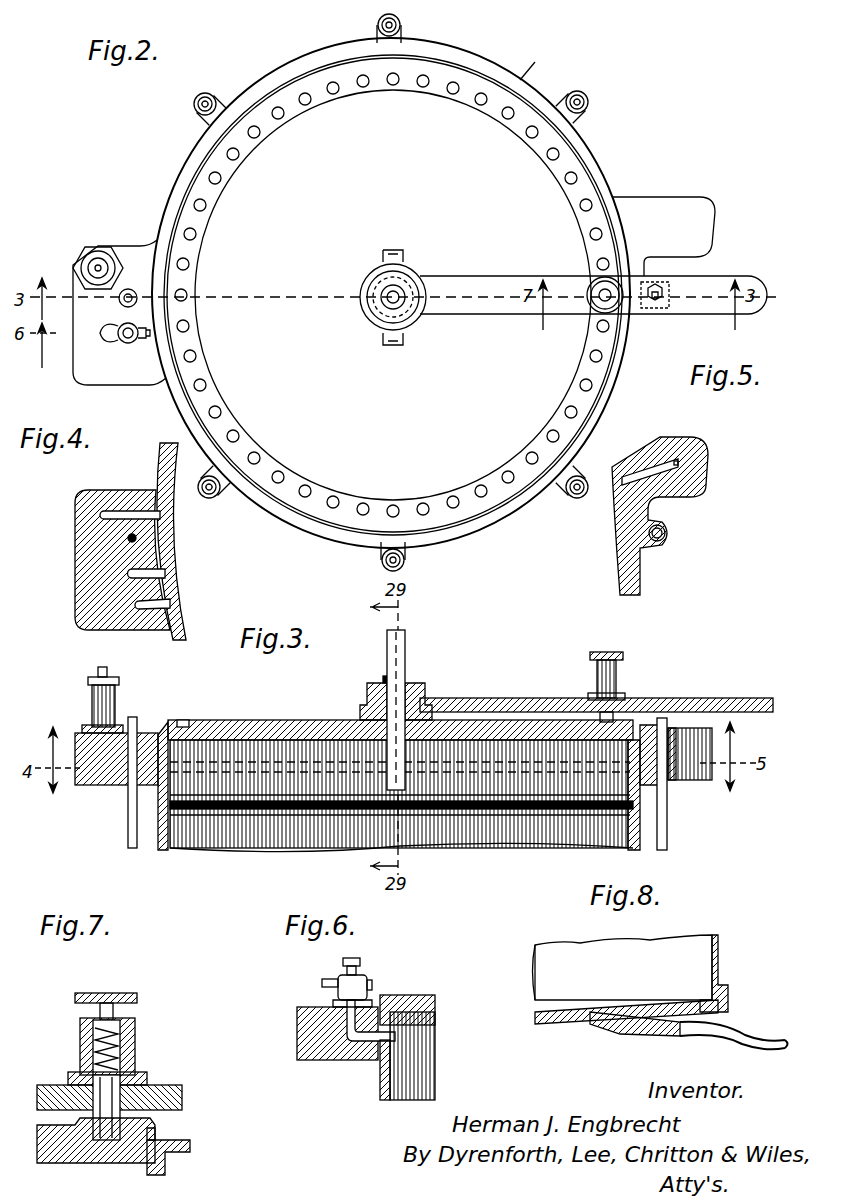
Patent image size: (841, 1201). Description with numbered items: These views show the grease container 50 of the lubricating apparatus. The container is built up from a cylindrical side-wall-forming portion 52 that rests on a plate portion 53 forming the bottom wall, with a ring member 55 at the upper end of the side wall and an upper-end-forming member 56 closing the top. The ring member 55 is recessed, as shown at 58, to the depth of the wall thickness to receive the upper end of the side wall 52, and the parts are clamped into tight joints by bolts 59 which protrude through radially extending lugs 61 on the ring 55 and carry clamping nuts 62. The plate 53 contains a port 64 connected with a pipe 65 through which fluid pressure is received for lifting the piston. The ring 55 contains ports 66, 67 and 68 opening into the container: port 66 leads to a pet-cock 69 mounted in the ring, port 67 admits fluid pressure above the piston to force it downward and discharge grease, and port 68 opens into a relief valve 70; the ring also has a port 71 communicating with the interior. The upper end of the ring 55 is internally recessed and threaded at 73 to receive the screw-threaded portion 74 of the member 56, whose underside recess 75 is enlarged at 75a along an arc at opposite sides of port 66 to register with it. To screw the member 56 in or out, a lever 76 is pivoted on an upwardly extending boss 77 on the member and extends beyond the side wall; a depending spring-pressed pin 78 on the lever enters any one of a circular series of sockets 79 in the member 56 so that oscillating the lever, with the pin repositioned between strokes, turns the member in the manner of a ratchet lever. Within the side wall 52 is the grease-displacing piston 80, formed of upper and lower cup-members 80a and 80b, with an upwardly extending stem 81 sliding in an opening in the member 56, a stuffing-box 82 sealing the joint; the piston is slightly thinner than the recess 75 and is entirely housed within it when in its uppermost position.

In FIG. 2, the grease container 50 is at (380, 293).
In FIG. 3, the grease container 50 is at (662, 840).
In FIG. 6, the grease container 50 is at (415, 1078).
In FIG. 8, the grease container 50 is at (692, 955).
In FIG. 2, the cylindrical side-wall-forming portion 52 is at (664, 208).
In FIG. 3, the cylindrical side-wall-forming portion 52 is at (668, 820).
In FIG. 6, the cylindrical side-wall-forming portion 52 is at (380, 1088).
In FIG. 8, the cylindrical side-wall-forming portion 52 is at (718, 965).
In FIG. 8, the plate portion 53 is at (562, 1024).
In FIG. 2, the ring member 55 is at (538, 62).
In FIG. 4, the ring member 55 is at (180, 634).
In FIG. 5, the ring member 55 is at (640, 572).
In FIG. 3, the ring member 55 is at (85, 783).
In FIG. 7, the ring member 55 is at (190, 1153).
In FIG. 6, the ring member 55 is at (305, 1033).
In FIG. 2, the upper-end-forming member 56 is at (377, 392).
In FIG. 3, the upper-end-forming member 56 is at (525, 722).
In FIG. 7, the upper-end-forming member 56 is at (60, 1145).
In FIG. 6, the upper-end-forming member 56 is at (428, 1005).
In FIG. 3, the recess 58 is at (666, 785).
In FIG. 2, the bolts 59 is at (389, 36).
In FIG. 4, the bolts 59 is at (128, 538).
In FIG. 5, the bolts 59 is at (664, 534).
In FIG. 3, the bolts 59 is at (130, 824).
In FIG. 2, the radially extending lugs 61 is at (400, 25).
In FIG. 5, the radially extending lugs 61 is at (663, 545).
In FIG. 2, the clamping nuts 62 is at (378, 25).
In FIG. 3, the clamping nuts 62 is at (112, 715).
In FIG. 8, the port 64 is at (625, 1024).
In FIG. 8, the pipe 65 is at (748, 1038).
In FIG. 4, the port 66 is at (140, 573).
In FIG. 6, the port 66 is at (360, 1058).
In FIG. 4, the port 67 is at (145, 606).
In FIG. 4, the port 68 is at (122, 512).
In FIG. 3, the port 68 is at (75, 758).
In FIG. 2, the pet-cock 69 is at (128, 344).
In FIG. 6, the pet-cock 69 is at (358, 985).
In FIG. 2, the relief valve 70 is at (99, 262).
In FIG. 3, the relief valve 70 is at (47, 692).
In FIG. 5, the port 71 is at (655, 468).
In FIG. 3, the internal annular recess 73 is at (690, 748).
In FIG. 3, the screw-threaded portion 74 is at (640, 742).
In FIG. 3, the recess 75 is at (285, 752).
In FIG. 6, the recess 75 is at (432, 1022).
In FIG. 4, the enlarged recess portion 75a is at (165, 578).
In FIG. 3, the enlarged recess portion 75a is at (166, 726).
In FIG. 6, the enlarged recess portion 75a is at (410, 1012).
In FIG. 2, the lever 76 is at (455, 313).
In FIG. 3, the lever 76 is at (487, 698).
In FIG. 7, the lever 76 is at (160, 1088).
In FIG. 2, the boss 77 is at (360, 292).
In FIG. 3, the boss 77 is at (360, 700).
In FIG. 2, the spring-pressed pin 78 is at (605, 295).
In FIG. 3, the spring-pressed pin 78 is at (565, 712).
In FIG. 7, the spring-pressed pin 78 is at (103, 1090).
In FIG. 2, the sockets 79 is at (206, 208).
In FIG. 7, the sockets 79 is at (157, 1132).
In FIG. 3, the grease-displacing piston 80 is at (505, 815).
In FIG. 3, the upper cup-member 80a is at (430, 792).
In FIG. 3, the lower cup-member 80b is at (432, 812).
In FIG. 2, the stem 81 is at (386, 302).
In FIG. 3, the stem 81 is at (406, 640).
In FIG. 2, the stuffing-box 82 is at (372, 282).
In FIG. 3, the stuffing-box 82 is at (406, 690).